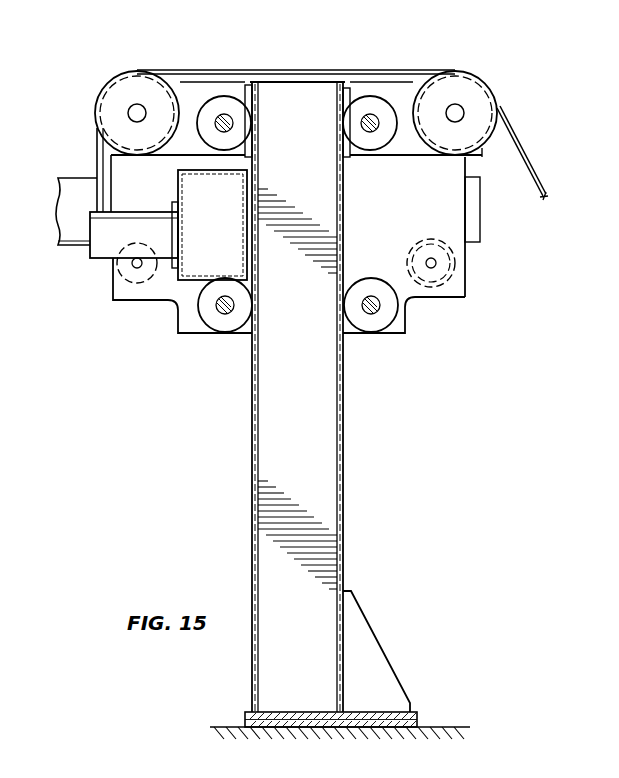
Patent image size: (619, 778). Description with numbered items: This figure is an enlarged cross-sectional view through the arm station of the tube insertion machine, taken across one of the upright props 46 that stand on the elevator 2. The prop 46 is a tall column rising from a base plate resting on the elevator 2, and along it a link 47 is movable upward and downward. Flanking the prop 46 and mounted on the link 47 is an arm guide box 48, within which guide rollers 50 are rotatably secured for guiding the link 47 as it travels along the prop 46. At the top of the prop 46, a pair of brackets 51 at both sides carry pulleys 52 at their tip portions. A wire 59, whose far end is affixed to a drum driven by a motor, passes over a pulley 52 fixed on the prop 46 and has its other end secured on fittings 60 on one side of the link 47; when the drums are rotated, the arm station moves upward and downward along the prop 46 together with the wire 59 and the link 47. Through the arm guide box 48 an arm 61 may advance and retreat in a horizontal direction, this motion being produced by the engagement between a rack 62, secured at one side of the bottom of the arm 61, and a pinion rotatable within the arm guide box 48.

The elevator 2 is at (432, 727).
The prop 46 is at (345, 437).
The link 47 is at (176, 182).
The arm guide box 48 is at (467, 268).
The guide rollers 50 is at (221, 100).
The brackets 51 is at (116, 152).
The pulleys 52 is at (185, 97).
The wire 59 is at (517, 143).
The fittings 60 is at (96, 259).
The arm 61 is at (72, 174).
The rack 62 is at (70, 247).